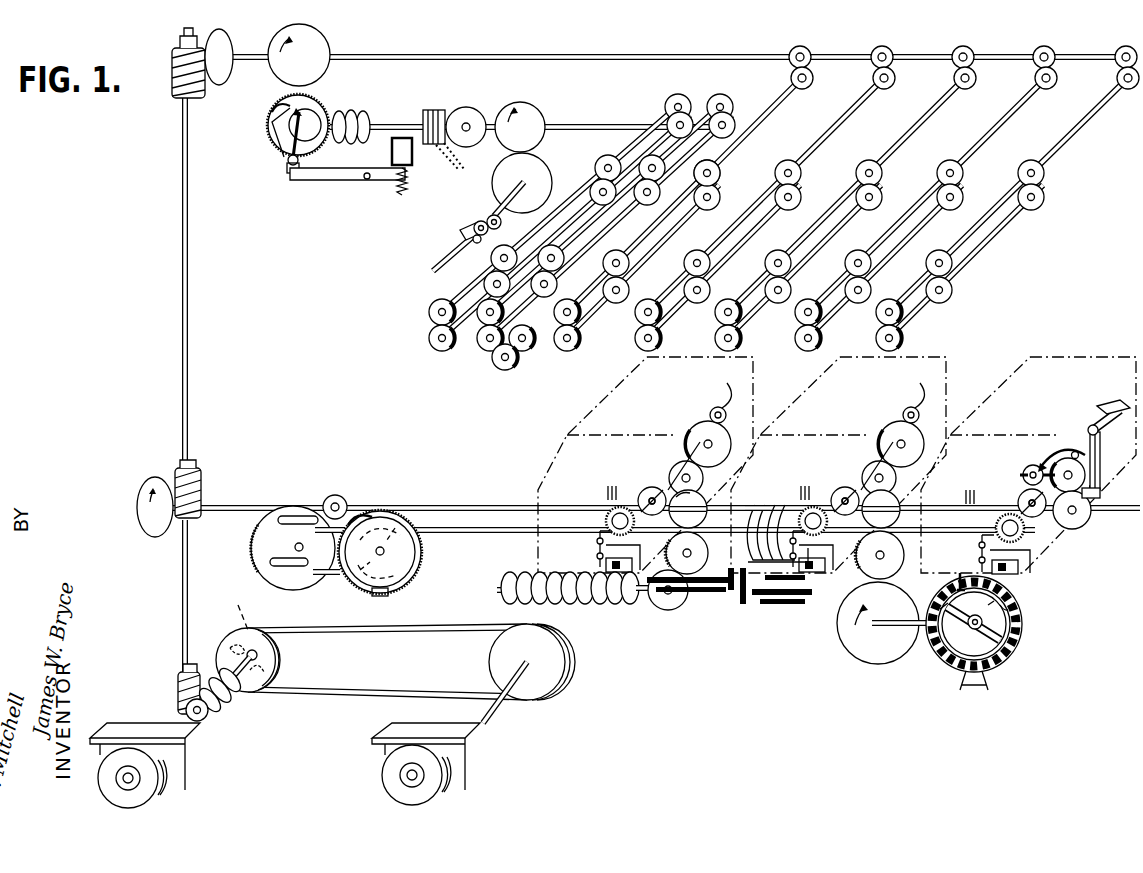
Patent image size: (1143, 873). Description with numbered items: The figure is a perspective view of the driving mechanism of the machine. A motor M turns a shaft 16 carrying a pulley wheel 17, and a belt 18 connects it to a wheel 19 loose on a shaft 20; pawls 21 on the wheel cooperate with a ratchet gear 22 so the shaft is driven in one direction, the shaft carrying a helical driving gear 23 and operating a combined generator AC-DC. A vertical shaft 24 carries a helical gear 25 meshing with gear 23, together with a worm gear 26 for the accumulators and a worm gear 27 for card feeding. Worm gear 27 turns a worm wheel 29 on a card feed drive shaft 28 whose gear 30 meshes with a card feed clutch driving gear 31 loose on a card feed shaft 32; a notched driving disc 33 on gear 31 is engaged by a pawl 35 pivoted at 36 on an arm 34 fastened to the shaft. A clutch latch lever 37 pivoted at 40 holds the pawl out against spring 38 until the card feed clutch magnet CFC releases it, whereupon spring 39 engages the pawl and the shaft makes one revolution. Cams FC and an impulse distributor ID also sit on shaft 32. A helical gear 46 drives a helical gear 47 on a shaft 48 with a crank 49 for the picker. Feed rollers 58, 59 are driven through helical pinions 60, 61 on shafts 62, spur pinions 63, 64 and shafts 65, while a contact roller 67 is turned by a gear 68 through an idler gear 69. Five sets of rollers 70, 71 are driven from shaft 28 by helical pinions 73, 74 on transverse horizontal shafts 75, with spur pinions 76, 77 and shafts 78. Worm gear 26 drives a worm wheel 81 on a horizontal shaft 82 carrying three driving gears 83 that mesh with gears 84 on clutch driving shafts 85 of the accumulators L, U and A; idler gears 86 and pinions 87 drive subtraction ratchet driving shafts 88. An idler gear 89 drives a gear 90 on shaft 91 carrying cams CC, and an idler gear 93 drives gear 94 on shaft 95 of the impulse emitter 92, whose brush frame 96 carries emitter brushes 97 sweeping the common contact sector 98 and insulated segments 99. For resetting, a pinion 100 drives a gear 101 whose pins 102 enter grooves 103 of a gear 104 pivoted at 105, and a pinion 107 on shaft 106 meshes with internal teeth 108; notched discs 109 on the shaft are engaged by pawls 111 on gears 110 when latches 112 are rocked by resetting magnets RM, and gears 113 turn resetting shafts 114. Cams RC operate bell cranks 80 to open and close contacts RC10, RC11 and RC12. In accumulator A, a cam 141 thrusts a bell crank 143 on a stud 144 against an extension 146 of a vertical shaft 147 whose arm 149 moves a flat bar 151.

The shaft 16 is at (478, 722).
The pulley wheel 17 is at (545, 685).
The belt 18 is at (370, 688).
The wheel 19 is at (252, 672).
The shaft 20 is at (199, 720).
The pawls 21 is at (232, 645).
The ratchet gear 22 is at (241, 604).
The helical driving gear 23 is at (226, 703).
The vertical shaft 24 is at (183, 352).
The helical gear 25 is at (178, 692).
The worm gear 26 is at (195, 480).
The worm gear 27 is at (173, 78).
The card feed drive shaft 28 is at (512, 58).
The worm wheel 29 is at (228, 44).
The gear 30 is at (313, 44).
The card feed clutch driving gear 31 is at (307, 100).
The card feed shaft 32 is at (372, 126).
The notched driving disc 33 is at (312, 115).
The arm 34 is at (312, 144).
The pawl 35 is at (275, 148).
The pivot 36 is at (288, 167).
The clutch latch lever 37 is at (342, 181).
The spring 38 is at (402, 196).
The spring 39 is at (268, 110).
The pivot 40 is at (366, 180).
The helical gear 46 is at (525, 108).
The helical gear 47 is at (500, 190).
The shaft 48 is at (478, 213).
The crank 49 is at (498, 230).
The upper feed rollers 58 is at (640, 158).
The lower feed rollers 59 is at (632, 190).
The helical pinions 60 is at (688, 136).
The helical pinions 61 is at (735, 104).
The shafts 62 is at (672, 150).
The spur pinions 63 is at (450, 346).
The pinions 64 is at (430, 315).
The shafts 65 is at (428, 283).
The contact roller 67 is at (695, 172).
The gear 68 is at (527, 350).
The idler gear 69 is at (505, 372).
The upper card feeding rollers 70 is at (722, 170).
The lower feed rollers 71 is at (722, 196).
The helical pinions 73 is at (878, 50).
The pinions 74 is at (878, 82).
The transverse horizontal shafts 75 is at (832, 111).
The spur pinion 76 is at (582, 318).
The pinion 77 is at (582, 342).
The shaft 78 is at (683, 222).
The bell cranks 80 is at (758, 512).
The worm wheel 81 is at (145, 520).
The horizontal shaft 82 is at (458, 512).
The driving gears 83 is at (700, 500).
The gears 84 is at (668, 475).
The clutch driving shafts 85 is at (672, 465).
The idler gears 86 is at (700, 430).
The pinions 87 is at (725, 393).
The subtraction ratchet driving shafts 88 is at (710, 412).
The idler gear 89 is at (693, 553).
The gear 90 is at (670, 608).
The shaft 91 is at (660, 598).
The impulse emitter 92 is at (1010, 648).
The idler gear 93 is at (893, 556).
The gear 94 is at (848, 635).
The shaft 95 is at (896, 628).
The brush frame 96 is at (992, 608).
The emitter brushes 97 is at (947, 608).
The common contact sector 98 is at (957, 575).
The insulated segments 99 is at (970, 686).
The pinion 100 is at (337, 494).
The gear 101 is at (262, 541).
The pins 102 is at (300, 582).
The grooves 103 is at (380, 596).
The gear 104 is at (408, 577).
The pivot 105 is at (402, 560).
The shaft 106 is at (487, 520).
The pinion 107 is at (365, 510).
The teeth 108 is at (385, 551).
The notched discs 109 is at (1040, 568).
The gears 110 is at (607, 518).
The pawls 111 is at (789, 483).
The latches 112 is at (598, 545).
The gears 113 is at (640, 496).
The resetting shafts 114 is at (650, 488).
The cam 141 is at (1022, 470).
The bell crank 143 is at (1050, 443).
The stud 144 is at (1074, 450).
The extension 146 is at (1094, 497).
The vertical shaft 147 is at (1097, 473).
The arm 149 is at (1092, 422).
The flat bar 151 is at (1117, 406).
The cams FC is at (365, 112).
The impulse distributor ID is at (440, 115).
The card feed clutch magnet CFC is at (444, 167).
The cams CC is at (630, 593).
The resetting magnet RM is at (606, 566).
The cams RC is at (782, 508).
The contact RC10 is at (768, 605).
The contact RC11 is at (705, 588).
The contact RC12 is at (735, 606).
The combined generator AC-DC is at (175, 770).
The motor M is at (465, 770).
The subtracting accumulator L is at (645, 465).
The subtracting accumulator U is at (838, 465).
The adding accumulator A is at (1028, 465).